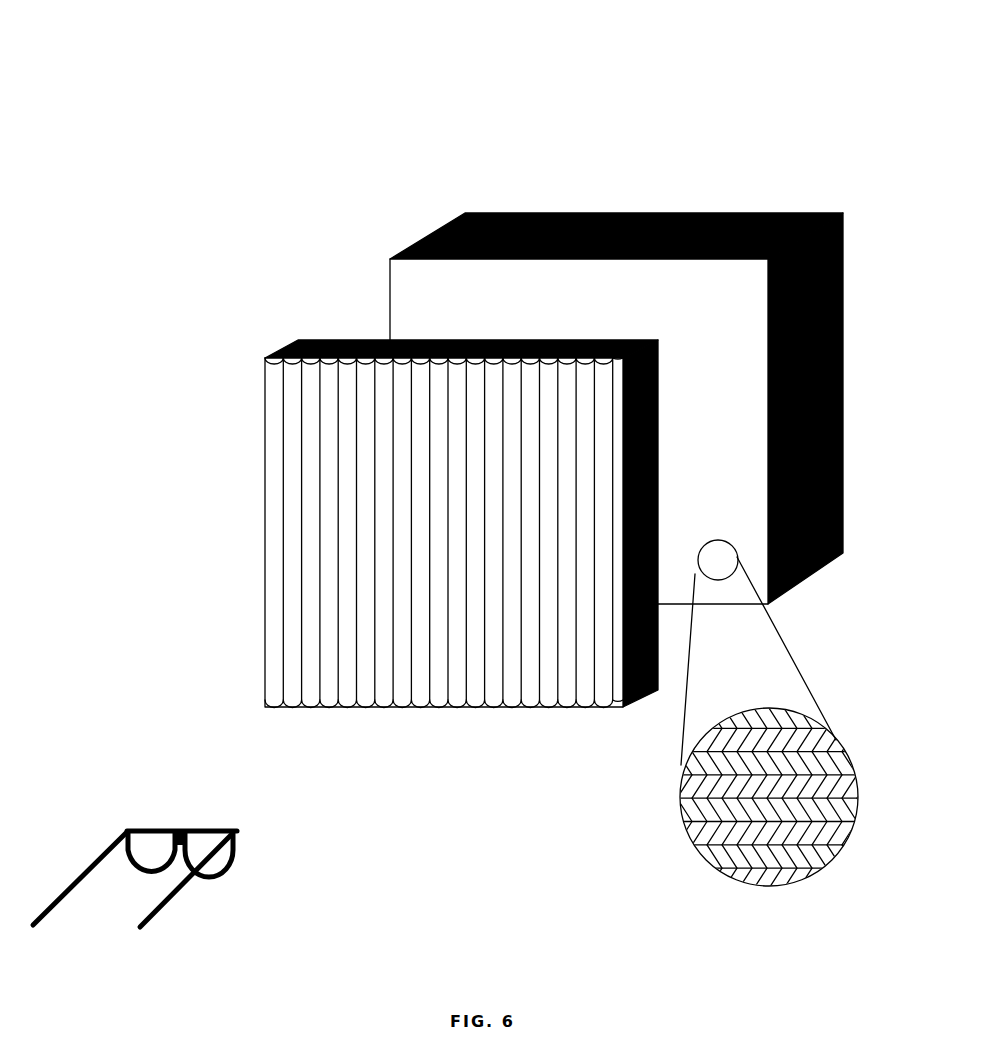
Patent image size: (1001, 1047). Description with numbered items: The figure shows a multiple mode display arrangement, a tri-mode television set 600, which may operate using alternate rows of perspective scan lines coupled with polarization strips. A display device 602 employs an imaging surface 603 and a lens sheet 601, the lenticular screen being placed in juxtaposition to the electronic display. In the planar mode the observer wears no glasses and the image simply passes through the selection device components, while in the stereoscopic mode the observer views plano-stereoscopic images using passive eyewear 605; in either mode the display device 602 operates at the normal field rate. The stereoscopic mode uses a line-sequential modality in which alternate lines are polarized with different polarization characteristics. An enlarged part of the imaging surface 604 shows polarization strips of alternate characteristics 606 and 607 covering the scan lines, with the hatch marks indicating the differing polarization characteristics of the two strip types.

The tri-mode television set 600 is at (703, 130).
The lens sheet 601 is at (337, 317).
The display device 602 is at (502, 197).
The imaging surface 603 is at (731, 515).
The enlarged part of the imaging surface 604 is at (746, 892).
The passive eyewear 605 is at (193, 900).
The polarization strip of first characteristic 606 is at (835, 786).
The polarization strip of second characteristic 607 is at (710, 807).